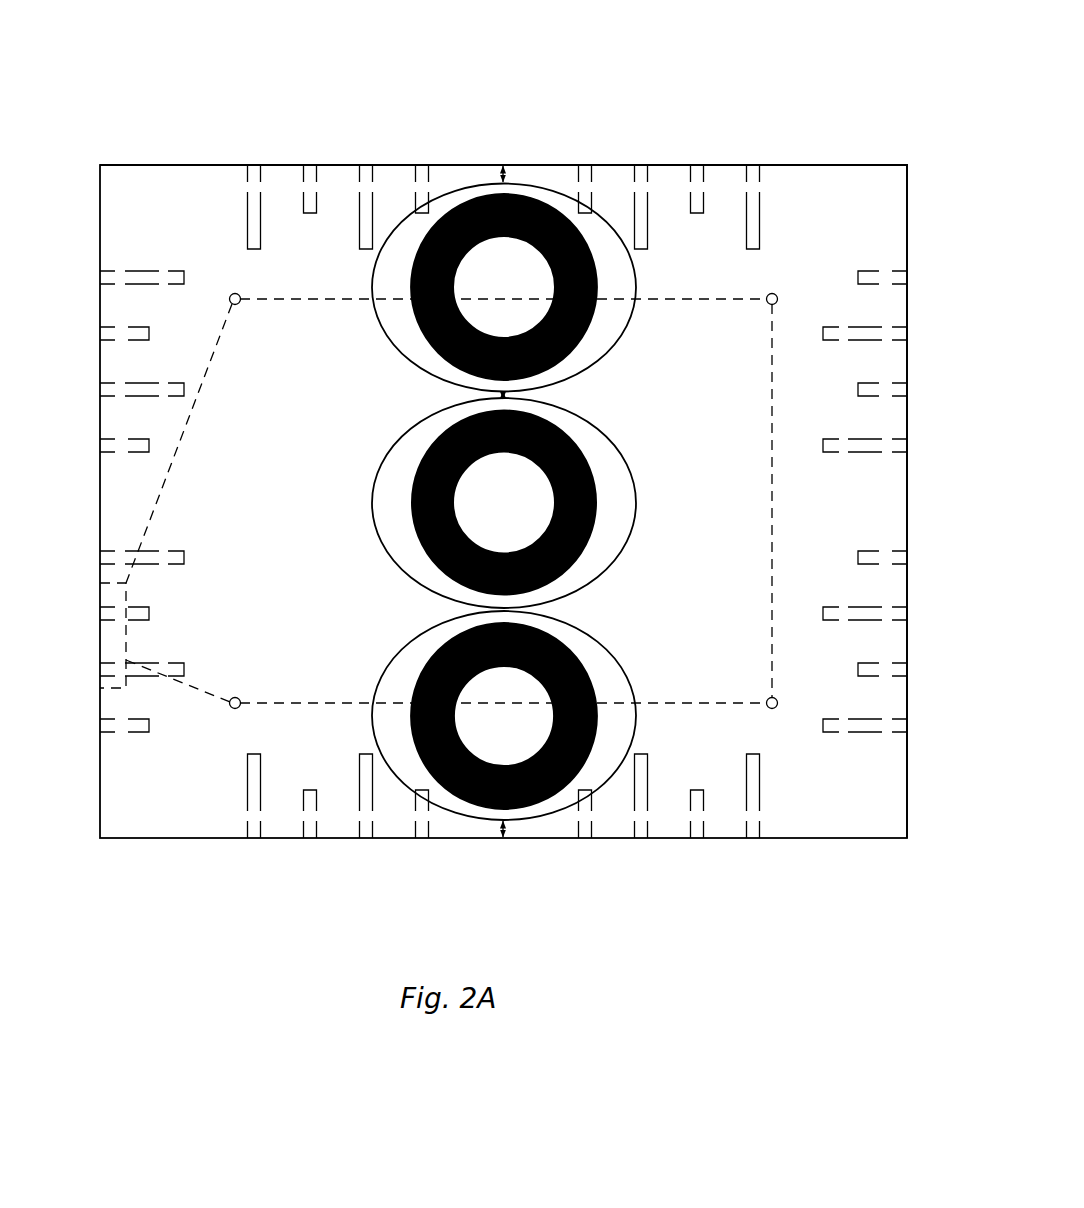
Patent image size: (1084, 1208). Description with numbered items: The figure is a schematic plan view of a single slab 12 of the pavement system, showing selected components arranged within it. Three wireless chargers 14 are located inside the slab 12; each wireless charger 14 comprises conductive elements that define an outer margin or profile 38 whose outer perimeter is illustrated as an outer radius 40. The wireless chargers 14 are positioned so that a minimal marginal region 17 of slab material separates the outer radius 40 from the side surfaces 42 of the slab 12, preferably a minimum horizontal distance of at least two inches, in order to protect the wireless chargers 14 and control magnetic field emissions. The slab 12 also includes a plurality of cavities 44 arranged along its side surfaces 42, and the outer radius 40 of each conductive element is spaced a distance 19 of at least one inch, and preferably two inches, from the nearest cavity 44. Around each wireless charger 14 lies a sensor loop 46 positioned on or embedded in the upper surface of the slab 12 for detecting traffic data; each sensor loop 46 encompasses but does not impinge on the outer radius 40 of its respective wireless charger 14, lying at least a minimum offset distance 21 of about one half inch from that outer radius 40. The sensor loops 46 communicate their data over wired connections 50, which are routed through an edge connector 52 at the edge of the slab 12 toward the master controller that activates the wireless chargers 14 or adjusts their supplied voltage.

The slab 12 is at (87, 140).
The wireless charger 14 is at (466, 807).
The minimal marginal region 17 is at (500, 178).
The distance 19 is at (572, 217).
The minimum offset distance 21 is at (505, 400).
The outer margin or profile 38 is at (540, 800).
The outer radius 40 is at (423, 765).
The side surface 42 is at (540, 163).
The cavity 44 is at (97, 388).
The sensor loop 46 is at (392, 343).
The wired connection 50 is at (163, 483).
The edge connector 52 is at (107, 638).